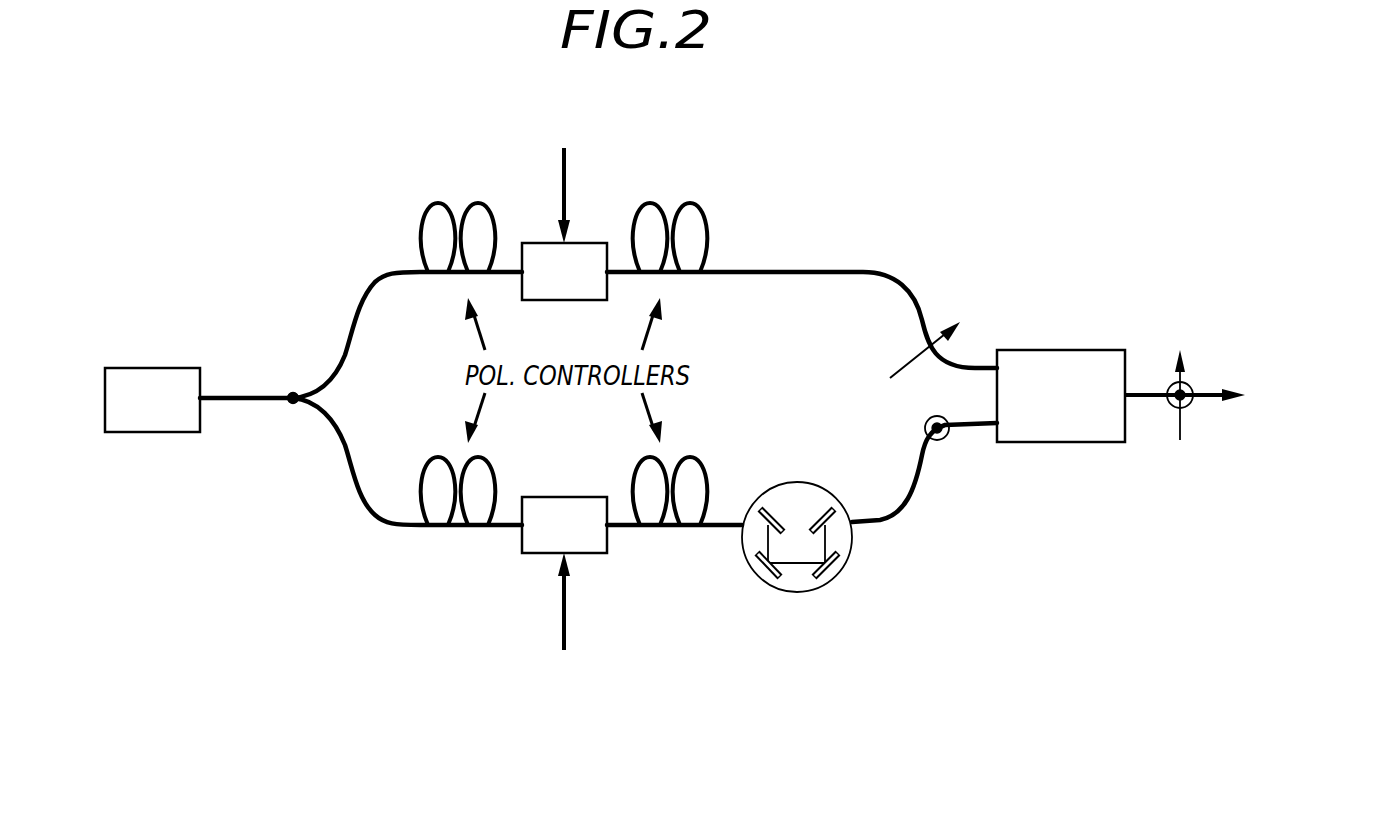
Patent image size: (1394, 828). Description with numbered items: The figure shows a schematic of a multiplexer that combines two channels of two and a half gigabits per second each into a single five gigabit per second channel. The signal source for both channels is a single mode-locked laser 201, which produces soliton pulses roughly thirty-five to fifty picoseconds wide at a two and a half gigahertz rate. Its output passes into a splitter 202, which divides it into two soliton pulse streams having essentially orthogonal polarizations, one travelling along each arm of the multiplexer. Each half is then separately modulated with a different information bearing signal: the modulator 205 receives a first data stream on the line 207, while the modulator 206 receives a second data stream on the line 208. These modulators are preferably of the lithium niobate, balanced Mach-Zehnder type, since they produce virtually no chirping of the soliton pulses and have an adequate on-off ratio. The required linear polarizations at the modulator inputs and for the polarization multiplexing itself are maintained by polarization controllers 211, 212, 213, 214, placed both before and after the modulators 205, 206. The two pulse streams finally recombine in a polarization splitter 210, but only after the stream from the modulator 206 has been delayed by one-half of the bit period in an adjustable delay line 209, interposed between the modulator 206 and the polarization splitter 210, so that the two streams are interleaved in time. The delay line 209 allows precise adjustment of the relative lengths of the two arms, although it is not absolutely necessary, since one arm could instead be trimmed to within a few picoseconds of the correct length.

The mode-locked laser 201 is at (154, 368).
The splitter 202 is at (288, 405).
The modulator 205 is at (588, 243).
The modulator 206 is at (565, 497).
The line 207 is at (561, 188).
The line 208 is at (561, 613).
The adjustable delay line 209 is at (800, 483).
The polarization splitter 210 is at (1056, 443).
The polarization controller 211 is at (437, 206).
The polarization controller 212 is at (452, 532).
The polarization controller 213 is at (688, 204).
The polarization controller 214 is at (702, 465).